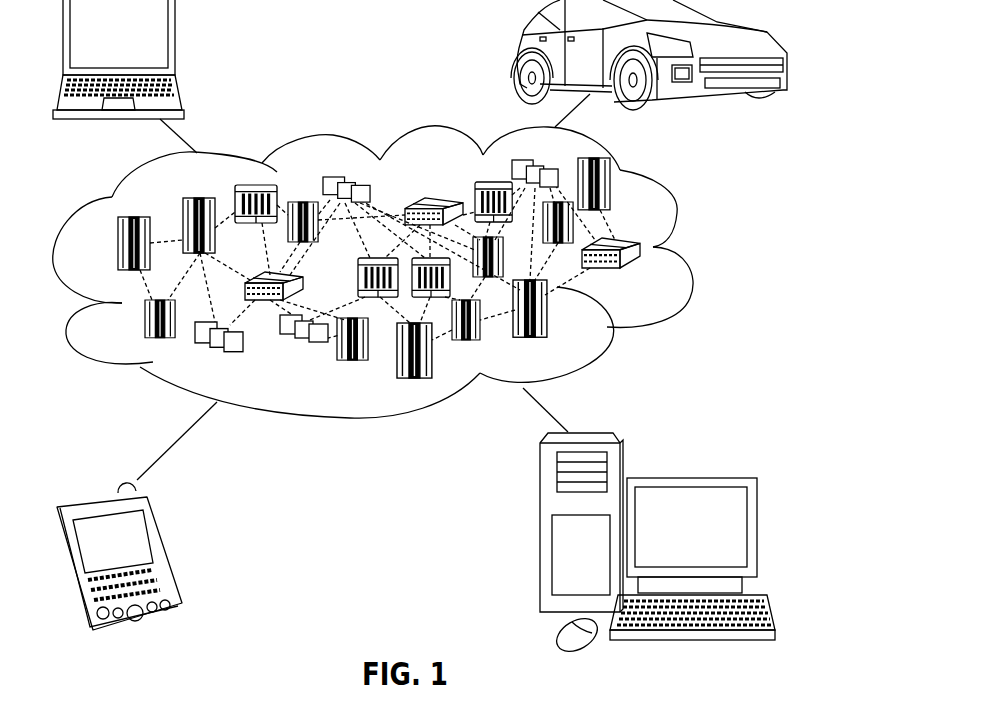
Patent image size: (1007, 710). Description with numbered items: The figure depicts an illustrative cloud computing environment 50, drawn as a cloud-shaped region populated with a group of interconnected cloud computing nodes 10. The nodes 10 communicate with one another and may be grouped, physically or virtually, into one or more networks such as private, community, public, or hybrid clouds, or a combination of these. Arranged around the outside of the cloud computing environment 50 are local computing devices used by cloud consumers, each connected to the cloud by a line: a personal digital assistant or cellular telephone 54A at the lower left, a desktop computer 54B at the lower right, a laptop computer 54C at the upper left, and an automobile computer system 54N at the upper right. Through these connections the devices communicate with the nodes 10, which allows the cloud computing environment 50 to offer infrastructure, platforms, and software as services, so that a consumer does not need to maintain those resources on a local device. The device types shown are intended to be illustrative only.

The cloud computing nodes 10 is at (642, 276).
The cloud computing environment 50 is at (690, 250).
The personal digital assistant (PDA) or cellular telephone 54A is at (167, 550).
The desktop computer 54B is at (690, 477).
The laptop computer 54C is at (177, 41).
The automobile computer system 54N is at (520, 50).